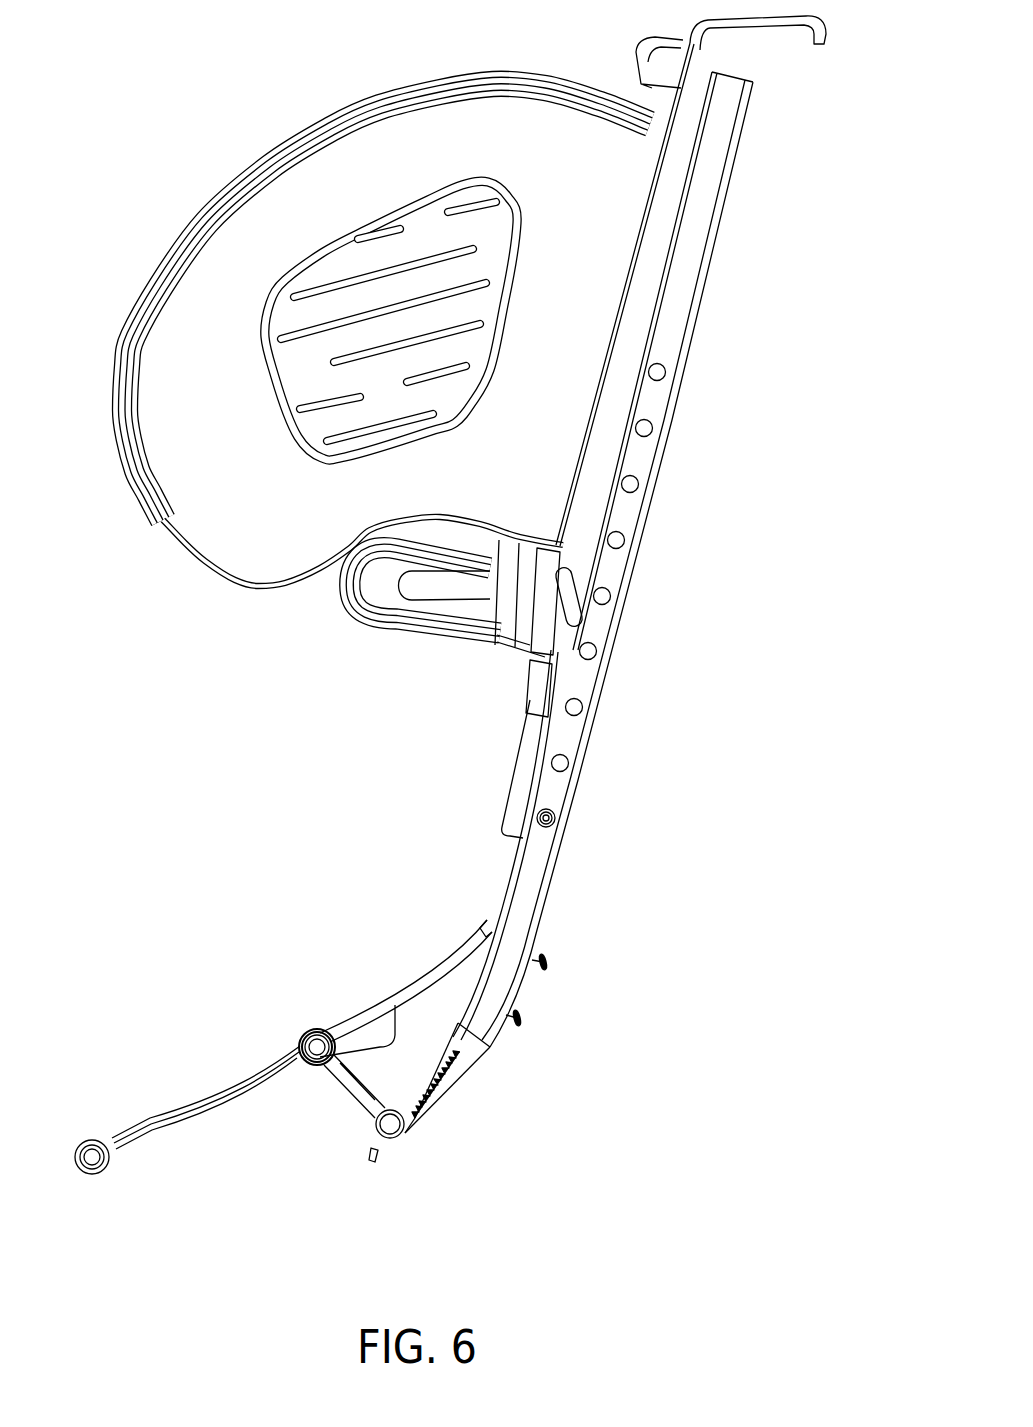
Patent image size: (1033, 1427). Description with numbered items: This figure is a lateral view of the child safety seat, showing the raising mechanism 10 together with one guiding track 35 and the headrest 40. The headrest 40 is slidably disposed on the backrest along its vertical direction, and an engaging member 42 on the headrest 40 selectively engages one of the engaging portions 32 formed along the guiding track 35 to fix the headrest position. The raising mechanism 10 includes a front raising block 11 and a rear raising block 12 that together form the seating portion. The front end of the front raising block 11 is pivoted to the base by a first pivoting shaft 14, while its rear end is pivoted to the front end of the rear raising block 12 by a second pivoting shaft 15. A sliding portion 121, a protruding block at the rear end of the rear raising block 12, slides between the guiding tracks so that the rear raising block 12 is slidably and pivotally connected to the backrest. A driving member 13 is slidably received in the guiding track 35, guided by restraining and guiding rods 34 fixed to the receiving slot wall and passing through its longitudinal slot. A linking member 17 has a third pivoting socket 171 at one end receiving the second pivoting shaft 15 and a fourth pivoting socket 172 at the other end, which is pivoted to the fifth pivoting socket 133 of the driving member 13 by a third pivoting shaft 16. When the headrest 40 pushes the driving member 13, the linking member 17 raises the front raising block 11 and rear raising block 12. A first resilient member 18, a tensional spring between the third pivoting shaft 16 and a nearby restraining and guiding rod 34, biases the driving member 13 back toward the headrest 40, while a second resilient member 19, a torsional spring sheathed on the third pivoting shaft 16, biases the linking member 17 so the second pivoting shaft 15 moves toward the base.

The raising mechanism 10 is at (418, 1136).
The front raising block 11 is at (210, 1103).
The rear raising block 12 is at (420, 983).
The sliding portion 121 is at (490, 918).
The driving member 13 is at (462, 1048).
The fifth pivoting socket 133 is at (412, 1119).
The first pivoting shaft 14 is at (90, 1150).
The second pivoting shaft 15 is at (317, 1045).
The third pivoting shaft 16 is at (377, 1133).
The linking member 17 is at (345, 1082).
The third pivoting socket 171 is at (300, 1046).
The fourth pivoting socket 172 is at (400, 1132).
The first resilient member 18 is at (447, 1086).
The second resilient member 19 is at (373, 1160).
The engaging portion 32 is at (565, 763).
The restraining and guiding rod 34 is at (517, 1018).
The guiding track 35 is at (538, 869).
The headrest 40 is at (560, 328).
The engaging member 42 is at (550, 820).